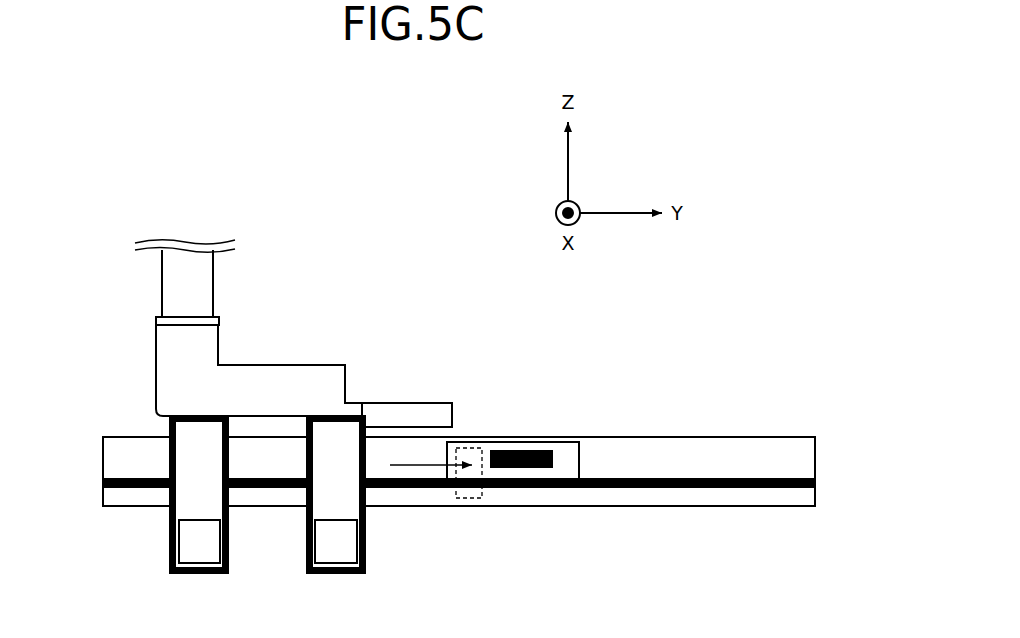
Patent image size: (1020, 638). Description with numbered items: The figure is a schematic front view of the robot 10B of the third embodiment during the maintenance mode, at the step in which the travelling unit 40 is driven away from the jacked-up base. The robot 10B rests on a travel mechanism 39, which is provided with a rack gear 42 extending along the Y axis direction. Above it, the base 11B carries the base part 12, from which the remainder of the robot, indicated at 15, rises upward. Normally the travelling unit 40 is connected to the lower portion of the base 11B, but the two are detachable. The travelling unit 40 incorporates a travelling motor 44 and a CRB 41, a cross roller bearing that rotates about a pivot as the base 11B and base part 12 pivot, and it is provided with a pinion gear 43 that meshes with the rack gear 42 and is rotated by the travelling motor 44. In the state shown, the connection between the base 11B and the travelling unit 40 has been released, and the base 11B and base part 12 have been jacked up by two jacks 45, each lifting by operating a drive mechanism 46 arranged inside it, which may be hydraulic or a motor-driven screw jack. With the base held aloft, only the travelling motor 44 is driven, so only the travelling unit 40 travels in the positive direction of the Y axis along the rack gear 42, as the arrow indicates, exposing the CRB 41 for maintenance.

The robot 10B is at (400, 217).
The base 11B is at (432, 417).
The base part 12 is at (163, 385).
The support shaft 15 is at (168, 283).
The travel mechanism 39 is at (665, 514).
The travelling unit 40 is at (568, 464).
The CRB 41 is at (523, 468).
The rack gear 42 is at (727, 488).
The pinion gear 43 is at (467, 499).
The travelling motor 44 is at (469, 452).
The jack 45 is at (169, 513).
The drive mechanism 46 is at (198, 574).